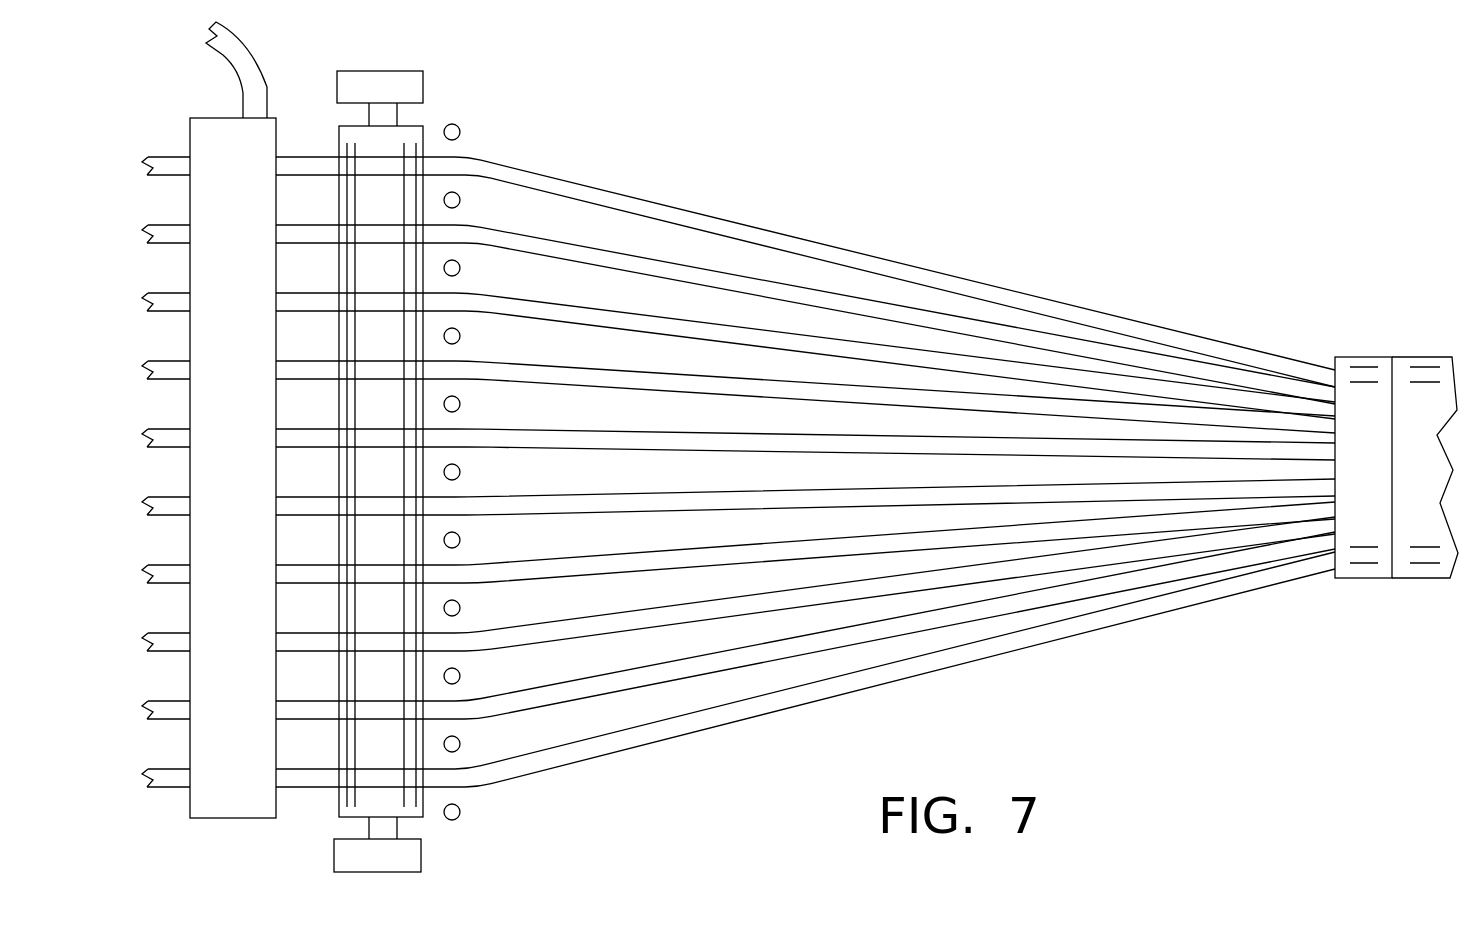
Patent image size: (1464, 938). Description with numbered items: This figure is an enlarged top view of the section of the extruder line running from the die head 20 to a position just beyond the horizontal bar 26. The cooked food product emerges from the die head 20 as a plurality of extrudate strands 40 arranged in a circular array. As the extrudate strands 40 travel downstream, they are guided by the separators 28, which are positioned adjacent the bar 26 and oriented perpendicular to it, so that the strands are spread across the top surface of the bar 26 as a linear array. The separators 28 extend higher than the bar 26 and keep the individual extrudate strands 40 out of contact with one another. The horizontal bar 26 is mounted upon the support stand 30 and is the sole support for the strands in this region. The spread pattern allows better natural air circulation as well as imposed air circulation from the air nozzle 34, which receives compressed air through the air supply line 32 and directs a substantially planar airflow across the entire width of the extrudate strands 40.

The die head 20 is at (1375, 362).
The horizontal bar 26 is at (368, 328).
The separators 28 is at (460, 810).
The support stand 30 is at (413, 83).
The air supply line 32 is at (245, 60).
The air nozzle 34 is at (222, 770).
The extrudate strands 40 is at (557, 187).